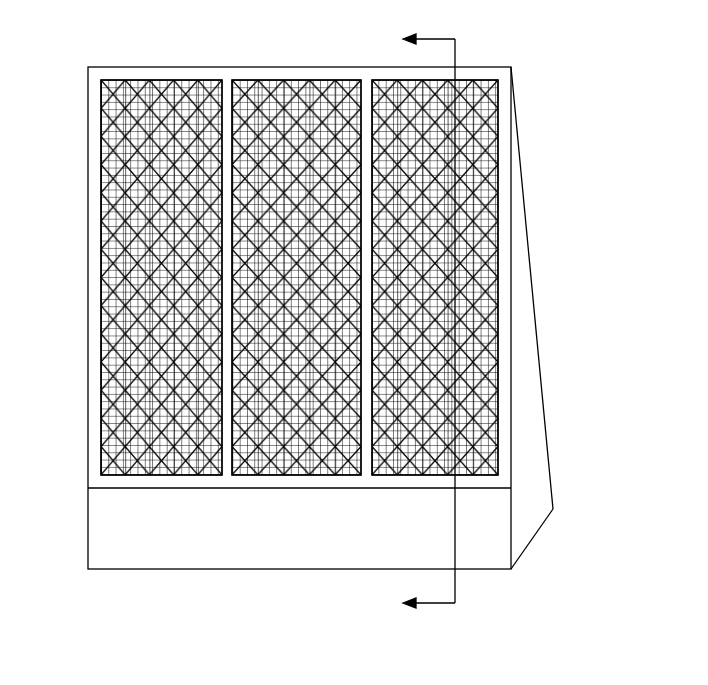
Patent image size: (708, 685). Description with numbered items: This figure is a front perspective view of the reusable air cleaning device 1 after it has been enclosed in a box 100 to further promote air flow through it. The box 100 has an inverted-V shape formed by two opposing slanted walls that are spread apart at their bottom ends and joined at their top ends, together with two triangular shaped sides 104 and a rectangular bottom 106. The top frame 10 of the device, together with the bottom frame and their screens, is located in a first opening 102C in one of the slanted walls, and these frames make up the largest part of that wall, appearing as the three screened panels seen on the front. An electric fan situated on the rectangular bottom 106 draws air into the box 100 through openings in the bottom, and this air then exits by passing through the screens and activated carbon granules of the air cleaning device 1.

The air cleaning device 1 is at (602, 75).
The top frame 10 is at (128, 306).
The box 100 is at (540, 370).
The first opening 102C is at (497, 436).
The triangular shaped sides 104 is at (525, 303).
The rectangular bottom 106 is at (537, 535).